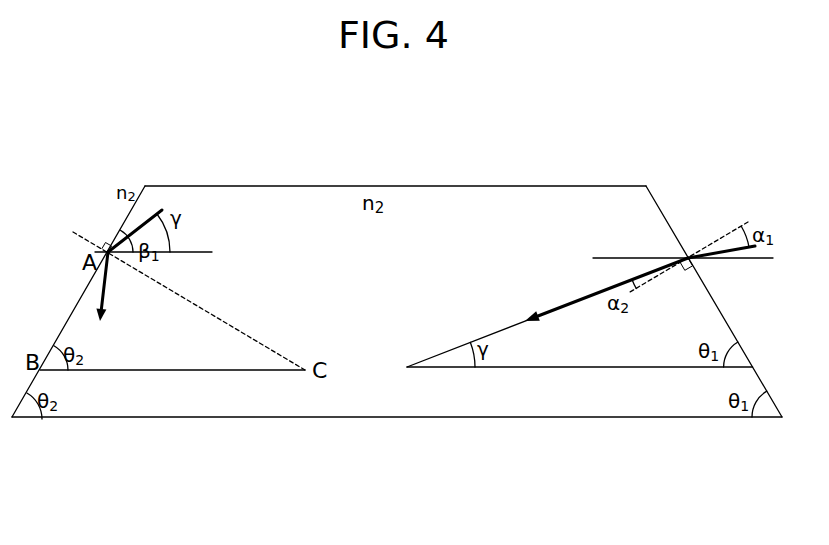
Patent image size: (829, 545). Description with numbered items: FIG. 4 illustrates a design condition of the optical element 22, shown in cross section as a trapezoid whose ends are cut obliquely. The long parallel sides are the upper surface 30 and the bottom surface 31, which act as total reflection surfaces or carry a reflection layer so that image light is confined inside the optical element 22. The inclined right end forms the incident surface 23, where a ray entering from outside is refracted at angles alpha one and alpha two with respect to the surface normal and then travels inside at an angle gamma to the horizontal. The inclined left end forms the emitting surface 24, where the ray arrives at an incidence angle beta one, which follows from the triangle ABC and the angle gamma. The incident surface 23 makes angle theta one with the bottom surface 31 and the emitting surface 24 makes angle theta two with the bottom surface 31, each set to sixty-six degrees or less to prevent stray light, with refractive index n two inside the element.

The optical element 22 is at (434, 166).
The incident surface 23 is at (661, 212).
The emitting surface 24 is at (131, 212).
The upper surface 30 is at (299, 185).
The bottom surface 31 is at (422, 418).